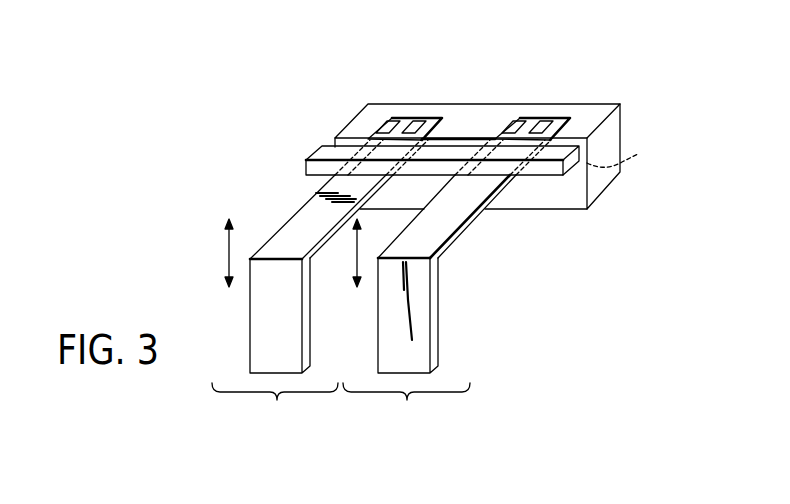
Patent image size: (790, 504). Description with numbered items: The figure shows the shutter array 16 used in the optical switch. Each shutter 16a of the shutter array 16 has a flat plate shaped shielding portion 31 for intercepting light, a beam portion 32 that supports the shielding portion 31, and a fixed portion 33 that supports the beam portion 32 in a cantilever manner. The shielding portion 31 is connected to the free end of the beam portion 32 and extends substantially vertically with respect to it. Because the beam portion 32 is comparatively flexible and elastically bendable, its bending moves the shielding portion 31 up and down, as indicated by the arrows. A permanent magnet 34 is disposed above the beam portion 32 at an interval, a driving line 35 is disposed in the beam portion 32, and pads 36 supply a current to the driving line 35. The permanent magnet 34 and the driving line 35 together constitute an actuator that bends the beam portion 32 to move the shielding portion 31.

The shutter array 16 is at (632, 84).
The shutter 16a is at (341, 408).
The shielding portion 31 is at (263, 327).
The beam portion 32 is at (330, 218).
The fixed portion 33 is at (363, 118).
The permanent magnet 34 is at (314, 152).
The driving line 35 is at (337, 134).
The pads 36 is at (393, 120).